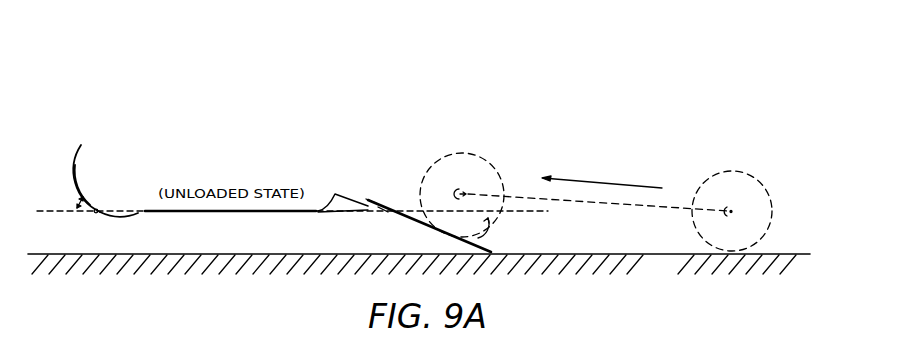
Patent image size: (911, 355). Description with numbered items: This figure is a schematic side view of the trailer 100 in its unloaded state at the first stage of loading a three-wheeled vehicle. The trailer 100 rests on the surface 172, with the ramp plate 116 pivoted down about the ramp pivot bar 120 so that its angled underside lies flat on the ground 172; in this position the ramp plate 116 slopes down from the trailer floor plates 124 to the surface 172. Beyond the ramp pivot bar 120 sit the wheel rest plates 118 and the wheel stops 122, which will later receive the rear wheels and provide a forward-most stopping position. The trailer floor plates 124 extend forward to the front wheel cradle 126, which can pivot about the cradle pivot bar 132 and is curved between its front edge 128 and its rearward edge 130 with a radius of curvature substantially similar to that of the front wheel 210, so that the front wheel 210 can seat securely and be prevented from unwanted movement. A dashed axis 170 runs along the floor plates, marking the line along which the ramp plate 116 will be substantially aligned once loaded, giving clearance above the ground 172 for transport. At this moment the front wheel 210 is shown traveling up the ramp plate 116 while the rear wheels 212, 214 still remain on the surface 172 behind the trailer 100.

The trailer 100 is at (147, 102).
The ramp plate 116 is at (425, 220).
The wheel rest plates 118 is at (371, 199).
The ramp pivot bar 120 is at (383, 212).
The wheel stops 122 is at (336, 208).
The trailer floor plates 124 is at (258, 213).
The front wheel cradle 126 is at (74, 173).
The front edge 128 is at (80, 146).
The rearward edge 130 is at (139, 214).
The cradle pivot bar 132 is at (96, 213).
The axis 170 is at (65, 212).
The surface 172 is at (666, 277).
The front wheel 210 is at (468, 153).
The rear wheel 212 is at (659, 194).
The rear wheel 214 is at (743, 172).